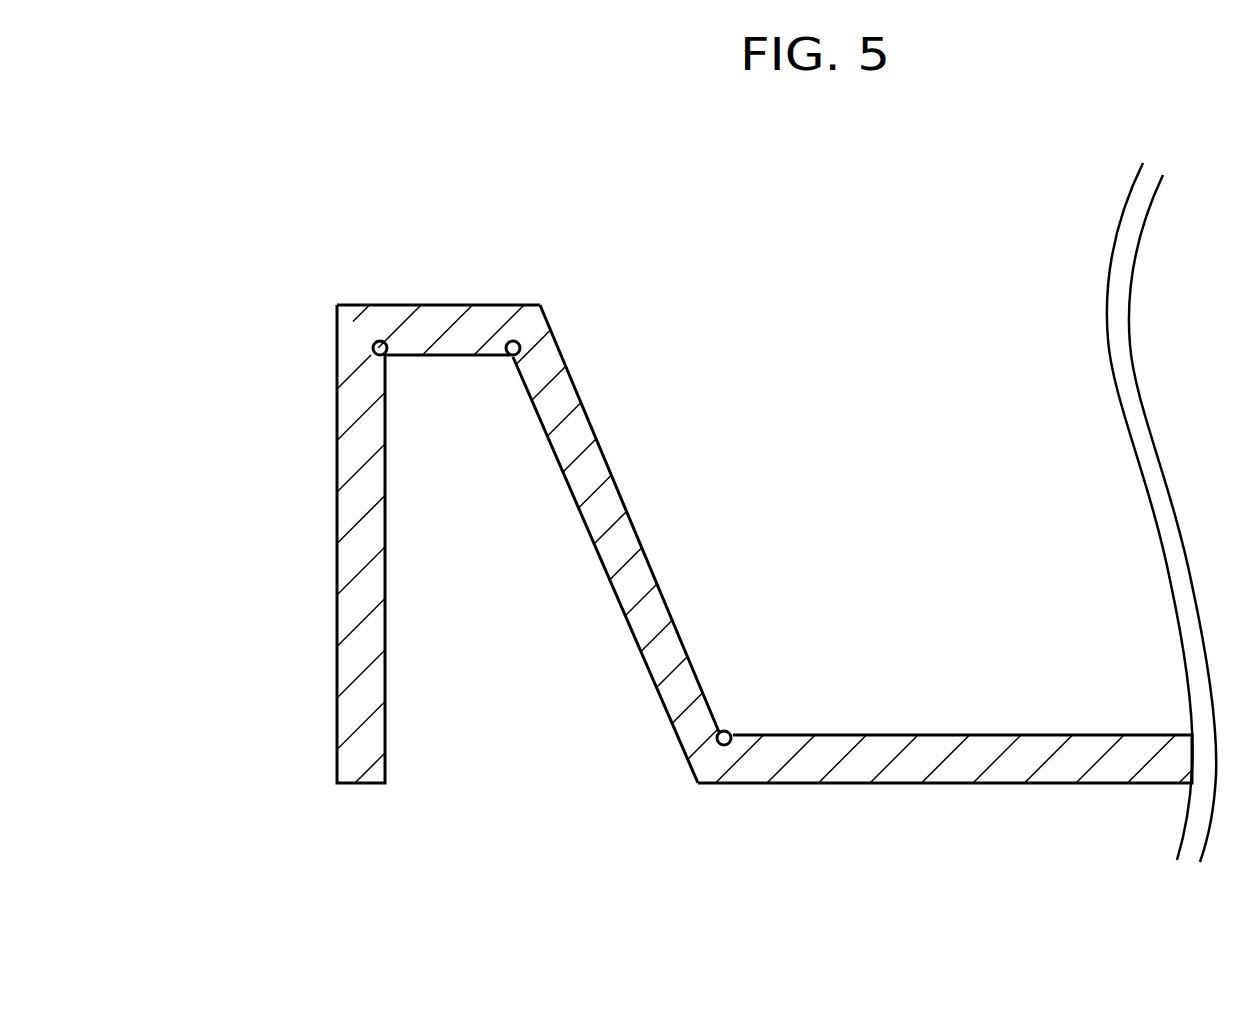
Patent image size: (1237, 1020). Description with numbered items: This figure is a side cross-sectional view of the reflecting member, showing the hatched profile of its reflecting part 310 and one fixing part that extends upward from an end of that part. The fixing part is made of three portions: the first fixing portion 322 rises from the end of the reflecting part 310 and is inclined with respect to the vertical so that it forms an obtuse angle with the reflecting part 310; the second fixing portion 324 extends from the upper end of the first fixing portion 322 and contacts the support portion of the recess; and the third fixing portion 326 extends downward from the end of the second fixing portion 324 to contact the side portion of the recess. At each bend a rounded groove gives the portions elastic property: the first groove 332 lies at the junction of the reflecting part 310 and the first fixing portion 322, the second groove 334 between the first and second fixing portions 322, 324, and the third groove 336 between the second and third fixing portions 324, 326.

The reflecting part 310 is at (1005, 768).
The first fixing portion 322 is at (622, 538).
The second fixing portion 324 is at (437, 322).
The third fixing portion 326 is at (355, 602).
The first groove 332 is at (727, 740).
The second groove 334 is at (514, 355).
The third groove 336 is at (383, 355).